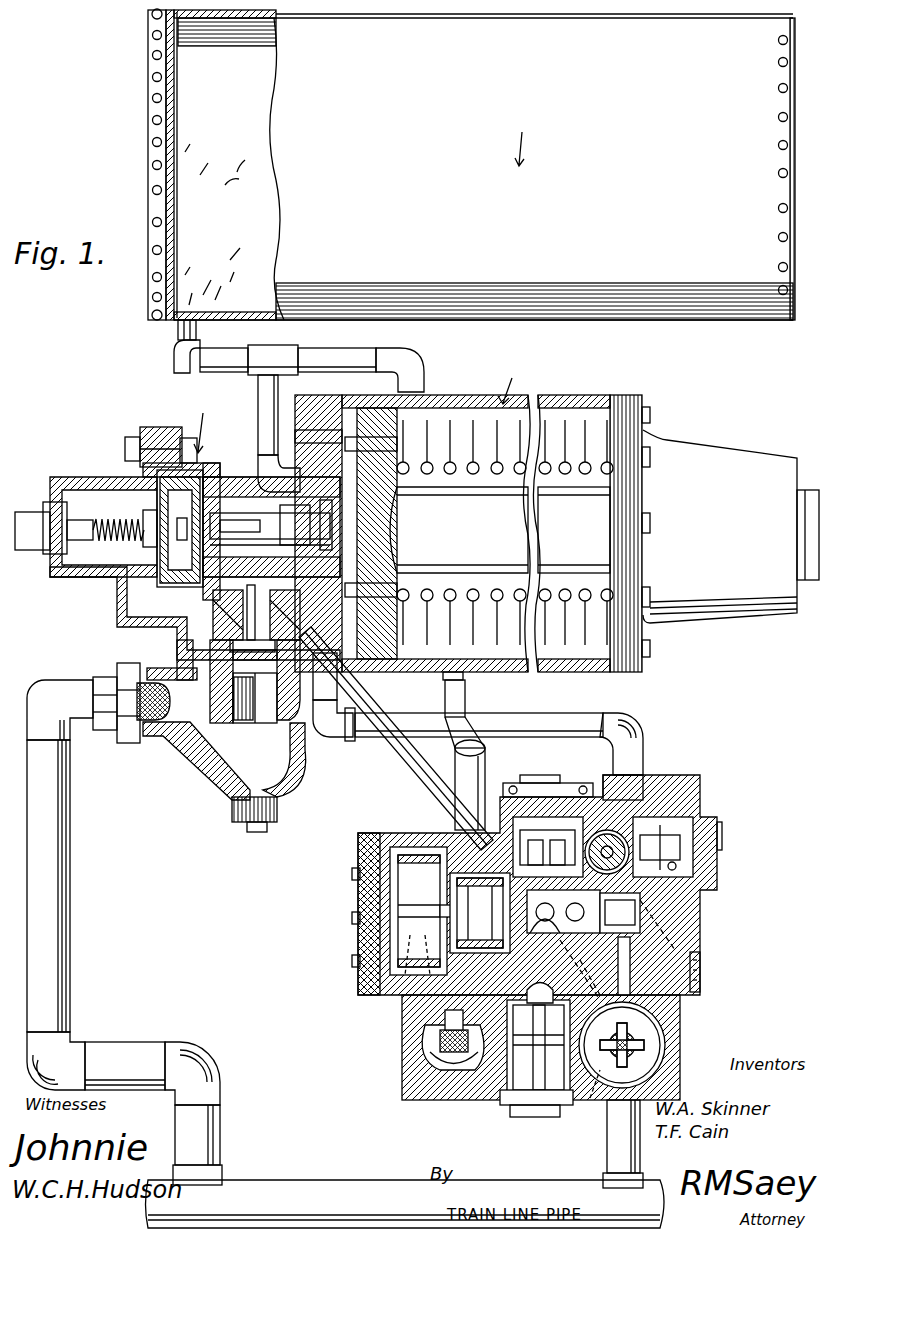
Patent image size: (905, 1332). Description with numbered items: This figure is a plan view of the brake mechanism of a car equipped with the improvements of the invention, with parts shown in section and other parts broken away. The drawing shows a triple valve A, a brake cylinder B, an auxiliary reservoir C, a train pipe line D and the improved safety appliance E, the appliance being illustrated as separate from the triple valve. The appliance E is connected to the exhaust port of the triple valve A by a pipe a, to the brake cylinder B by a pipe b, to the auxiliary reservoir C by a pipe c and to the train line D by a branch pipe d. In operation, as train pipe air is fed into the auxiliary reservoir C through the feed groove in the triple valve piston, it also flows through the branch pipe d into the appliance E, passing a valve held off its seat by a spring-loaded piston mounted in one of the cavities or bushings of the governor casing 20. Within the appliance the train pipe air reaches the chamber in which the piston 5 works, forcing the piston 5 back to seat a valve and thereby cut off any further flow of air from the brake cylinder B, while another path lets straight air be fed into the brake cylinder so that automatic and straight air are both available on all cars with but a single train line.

The auxiliary reservoir C is at (186, 148).
The triple valve A is at (122, 602).
The brake cylinder B is at (557, 516).
The train pipe line D is at (63, 995).
The safety appliance E is at (358, 915).
The pipe a is at (398, 757).
The pipe b is at (577, 726).
The pipe c is at (482, 745).
The branch pipe d is at (607, 1152).
The governor casing 20 is at (402, 1068).
The piston 5 is at (590, 1098).